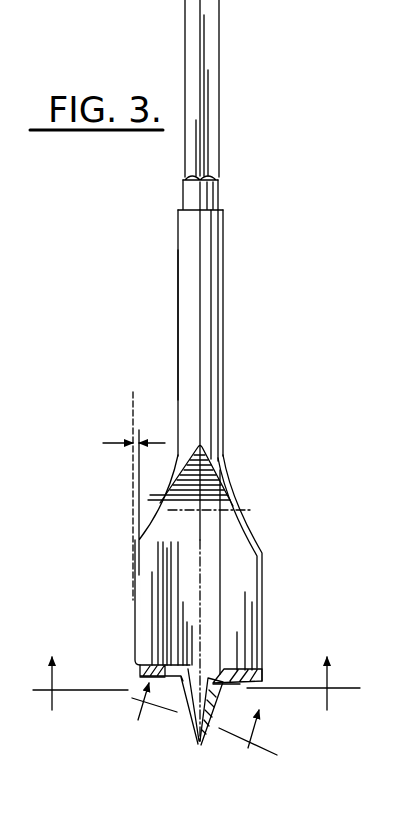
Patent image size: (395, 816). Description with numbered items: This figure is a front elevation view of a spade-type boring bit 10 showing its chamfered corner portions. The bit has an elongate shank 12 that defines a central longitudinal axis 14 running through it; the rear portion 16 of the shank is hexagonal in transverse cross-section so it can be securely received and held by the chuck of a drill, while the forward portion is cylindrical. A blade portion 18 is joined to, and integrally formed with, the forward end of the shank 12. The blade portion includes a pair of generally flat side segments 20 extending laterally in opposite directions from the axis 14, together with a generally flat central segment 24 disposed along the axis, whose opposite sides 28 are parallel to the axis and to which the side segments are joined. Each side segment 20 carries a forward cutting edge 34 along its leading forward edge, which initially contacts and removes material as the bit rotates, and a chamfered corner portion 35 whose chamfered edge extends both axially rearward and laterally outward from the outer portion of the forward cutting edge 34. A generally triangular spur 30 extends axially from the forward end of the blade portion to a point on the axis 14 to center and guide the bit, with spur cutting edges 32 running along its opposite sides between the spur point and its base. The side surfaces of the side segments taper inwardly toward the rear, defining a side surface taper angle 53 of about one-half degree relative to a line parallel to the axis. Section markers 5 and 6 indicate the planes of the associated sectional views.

The spade-type boring bit 10 is at (155, 275).
The elongate shank 12 is at (217, 267).
The central longitudinal axis 14 is at (200, 327).
The rear portion 16 is at (215, 93).
The blade portion 18 is at (133, 597).
The side segments 20 is at (148, 553).
The central segment 24 is at (212, 487).
The opposite sides 28 is at (222, 592).
The spur 30 is at (177, 672).
The spur cutting edges 32 is at (212, 738).
The forward cutting edge 34 is at (247, 688).
The chamfered corner portion 35 is at (140, 678).
The side surface taper angle 53 is at (137, 440).
The section line 5- 5 is at (196, 701).
The section line 6- 6 is at (203, 733).